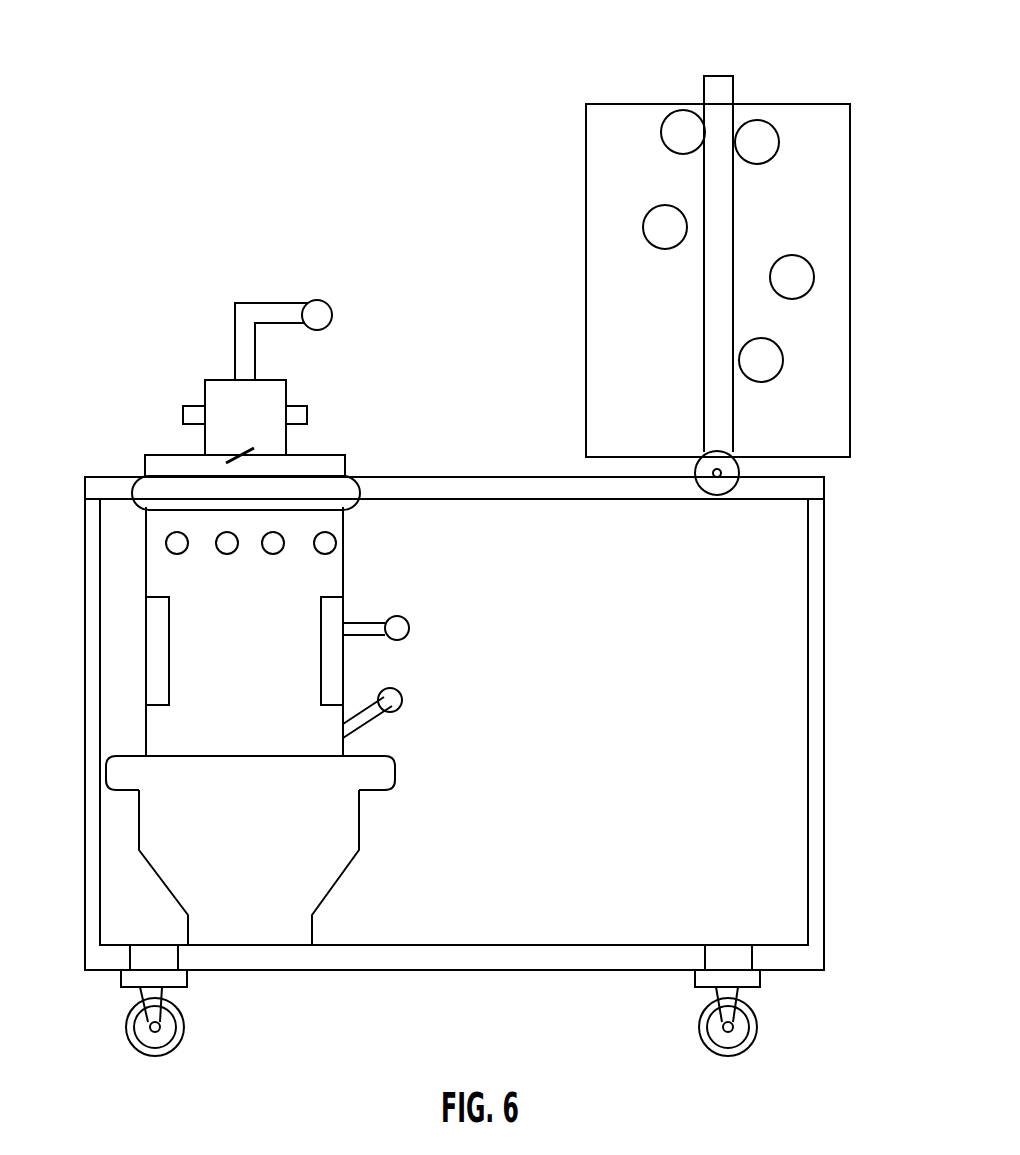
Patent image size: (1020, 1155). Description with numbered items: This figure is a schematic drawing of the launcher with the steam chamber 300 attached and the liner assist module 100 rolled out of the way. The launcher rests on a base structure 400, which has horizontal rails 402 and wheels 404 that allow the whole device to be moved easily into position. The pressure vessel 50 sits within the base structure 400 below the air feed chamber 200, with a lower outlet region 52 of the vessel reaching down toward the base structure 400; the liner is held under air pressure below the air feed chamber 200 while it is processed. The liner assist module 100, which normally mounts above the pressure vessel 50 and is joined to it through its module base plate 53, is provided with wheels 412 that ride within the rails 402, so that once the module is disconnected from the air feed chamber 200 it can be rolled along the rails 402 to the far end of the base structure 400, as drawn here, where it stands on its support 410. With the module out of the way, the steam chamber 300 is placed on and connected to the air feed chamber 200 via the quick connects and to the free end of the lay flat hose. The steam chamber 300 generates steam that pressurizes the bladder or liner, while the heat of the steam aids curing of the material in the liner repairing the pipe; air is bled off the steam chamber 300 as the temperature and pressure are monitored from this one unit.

The pressure vessel 50 is at (139, 850).
The hopper outlet 52 is at (293, 948).
The module base plate 53 is at (608, 458).
The liner assist module 100 is at (823, 201).
The air feed chamber 200 is at (147, 567).
The steam chamber 300 is at (218, 378).
The base structure 400 is at (824, 565).
The horizontal rails 402 is at (824, 487).
The wheels 404 is at (130, 979).
The support rod 410 is at (713, 115).
The wheels 412 is at (740, 462).